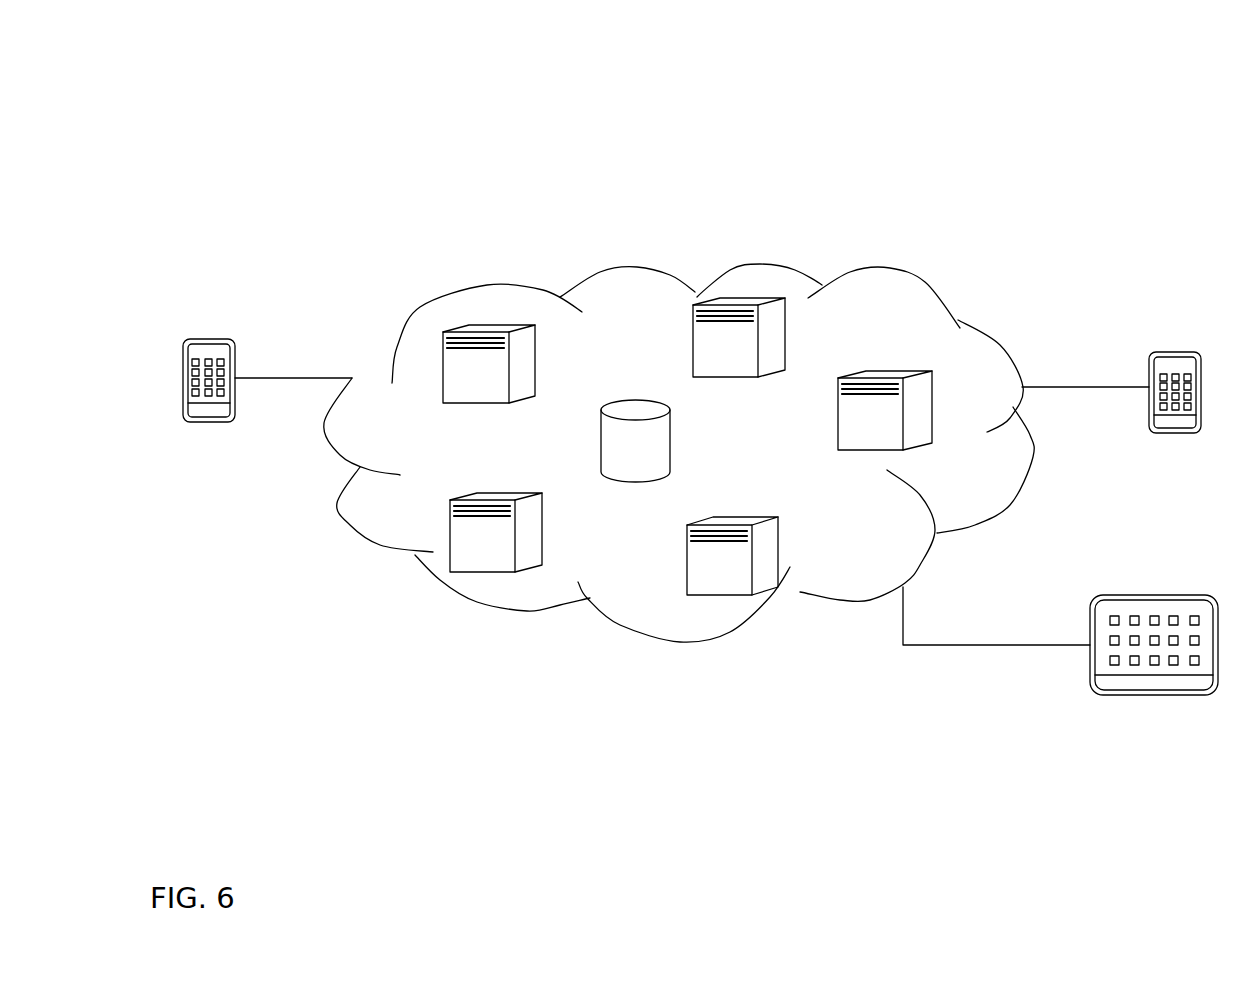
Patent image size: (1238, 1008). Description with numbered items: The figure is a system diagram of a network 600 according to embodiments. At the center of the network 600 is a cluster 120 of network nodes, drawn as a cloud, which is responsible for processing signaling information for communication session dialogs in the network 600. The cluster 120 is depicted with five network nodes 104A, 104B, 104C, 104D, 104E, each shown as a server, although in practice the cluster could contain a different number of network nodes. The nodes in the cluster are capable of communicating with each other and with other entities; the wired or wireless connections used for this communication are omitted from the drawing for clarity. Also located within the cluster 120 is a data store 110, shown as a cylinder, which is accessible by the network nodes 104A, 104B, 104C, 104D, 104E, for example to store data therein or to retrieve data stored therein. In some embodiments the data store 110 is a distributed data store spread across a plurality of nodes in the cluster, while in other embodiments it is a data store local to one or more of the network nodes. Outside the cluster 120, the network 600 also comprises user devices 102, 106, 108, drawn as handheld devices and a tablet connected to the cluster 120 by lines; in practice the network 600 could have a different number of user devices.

The network 600 is at (77, 61).
The user device 102 is at (190, 413).
The network node 104A is at (489, 364).
The network node 104B is at (739, 337).
The network node 104C is at (885, 410).
The network node 104D is at (732, 556).
The network node 104E is at (496, 532).
The user device 106 is at (1189, 359).
The user device 108 is at (1156, 613).
The data store 110 is at (635, 441).
The cluster 120 is at (679, 480).